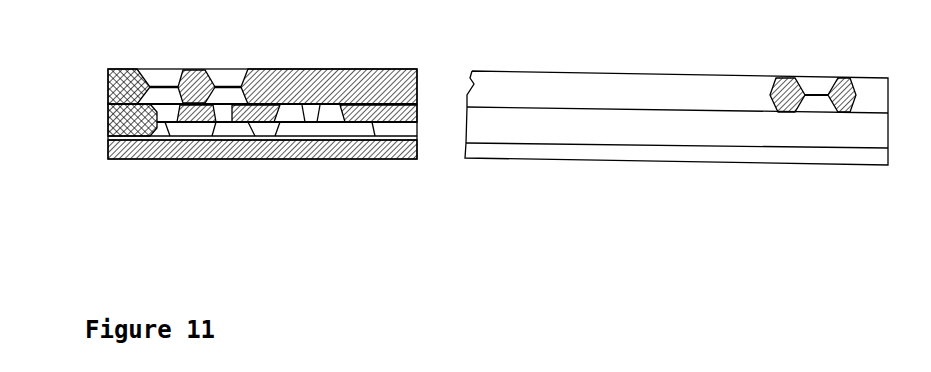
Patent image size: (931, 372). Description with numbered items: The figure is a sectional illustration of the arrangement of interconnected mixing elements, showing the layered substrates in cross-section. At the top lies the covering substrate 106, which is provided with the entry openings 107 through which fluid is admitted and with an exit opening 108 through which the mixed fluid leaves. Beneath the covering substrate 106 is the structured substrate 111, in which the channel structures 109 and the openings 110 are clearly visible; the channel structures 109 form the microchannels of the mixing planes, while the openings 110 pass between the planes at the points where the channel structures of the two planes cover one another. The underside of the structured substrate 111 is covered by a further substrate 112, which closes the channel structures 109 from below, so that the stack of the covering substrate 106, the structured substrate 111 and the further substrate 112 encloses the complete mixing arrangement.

The covering substrate 106 is at (335, 83).
The entry openings 107 is at (238, 70).
The exit opening 108 is at (817, 87).
The channel structures 109 is at (317, 133).
The openings 110 is at (225, 118).
The structured substrate 111 is at (118, 125).
The further substrate 112 is at (350, 158).